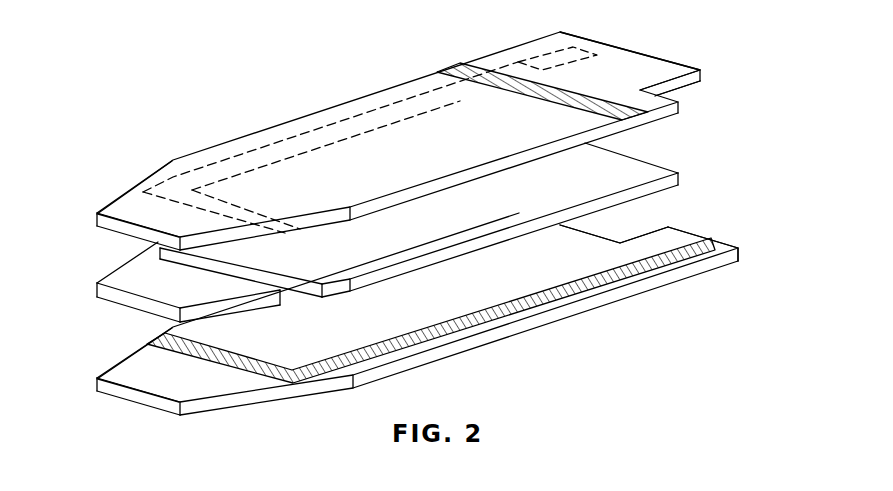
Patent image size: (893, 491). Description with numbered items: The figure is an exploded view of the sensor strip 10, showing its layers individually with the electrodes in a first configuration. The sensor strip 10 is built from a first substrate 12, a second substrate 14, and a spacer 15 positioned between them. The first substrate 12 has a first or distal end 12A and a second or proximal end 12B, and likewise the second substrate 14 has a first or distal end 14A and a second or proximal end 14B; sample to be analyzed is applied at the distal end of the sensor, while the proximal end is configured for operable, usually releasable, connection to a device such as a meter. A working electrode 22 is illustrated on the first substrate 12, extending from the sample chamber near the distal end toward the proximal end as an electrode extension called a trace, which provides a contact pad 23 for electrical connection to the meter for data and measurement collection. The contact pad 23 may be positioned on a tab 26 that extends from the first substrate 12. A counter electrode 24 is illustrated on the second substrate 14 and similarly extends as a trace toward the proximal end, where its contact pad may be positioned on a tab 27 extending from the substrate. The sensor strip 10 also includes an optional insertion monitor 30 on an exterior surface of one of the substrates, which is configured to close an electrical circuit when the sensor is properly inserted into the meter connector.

The sensor strip 10 is at (649, 362).
The first substrate 12 is at (172, 157).
The distal end of first substrate 12A is at (123, 228).
The proximal end of first substrate 12B is at (622, 48).
The second substrate 14 is at (230, 407).
The distal end of second substrate 14A is at (133, 398).
The proximal end of second substrate 14B is at (718, 238).
The spacer 15 is at (120, 298).
The working electrode 22 is at (350, 121).
The contact pad 23 is at (542, 56).
The counter electrode 24 is at (513, 312).
The tab 26 is at (688, 88).
The tab 27 is at (647, 233).
The insertion monitor 30 is at (500, 72).